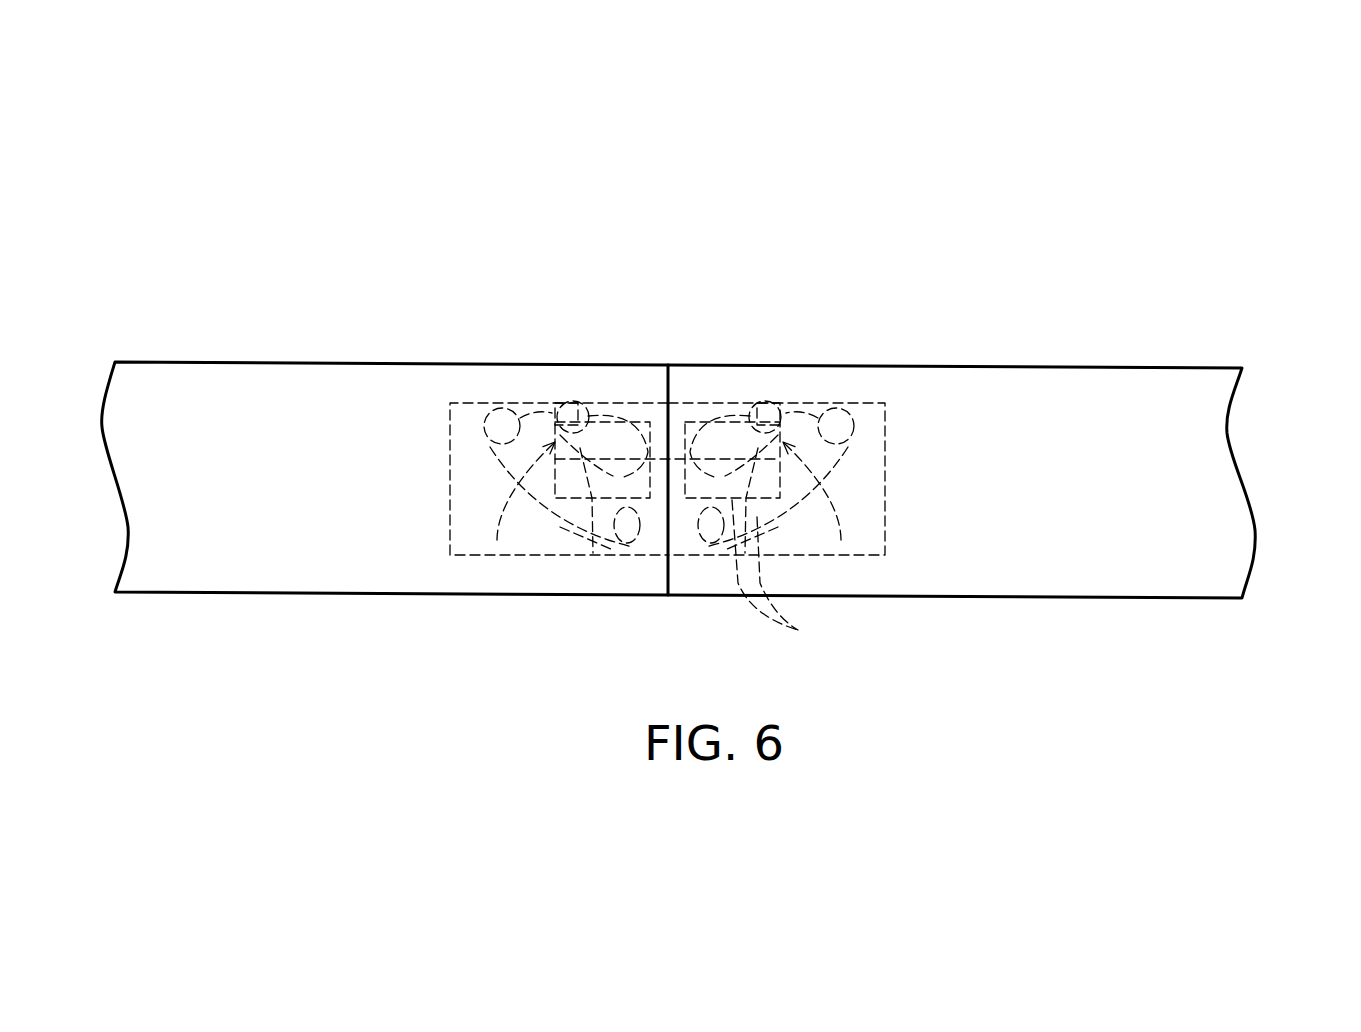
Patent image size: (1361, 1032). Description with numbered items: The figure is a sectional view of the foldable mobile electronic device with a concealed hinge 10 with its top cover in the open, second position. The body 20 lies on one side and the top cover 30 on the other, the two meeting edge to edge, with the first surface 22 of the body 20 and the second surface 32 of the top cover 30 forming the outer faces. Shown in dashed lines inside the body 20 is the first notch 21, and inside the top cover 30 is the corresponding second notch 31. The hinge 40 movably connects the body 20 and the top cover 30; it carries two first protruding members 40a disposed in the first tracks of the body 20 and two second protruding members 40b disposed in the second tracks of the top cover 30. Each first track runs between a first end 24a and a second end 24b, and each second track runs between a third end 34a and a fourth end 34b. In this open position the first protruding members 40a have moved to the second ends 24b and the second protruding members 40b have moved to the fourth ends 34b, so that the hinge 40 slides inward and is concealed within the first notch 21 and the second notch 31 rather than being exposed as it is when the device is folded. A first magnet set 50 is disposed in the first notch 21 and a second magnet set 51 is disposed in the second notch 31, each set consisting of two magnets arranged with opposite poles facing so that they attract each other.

The foldable mobile electronic device with a concealed hinge 10 is at (64, 173).
The body 20 is at (308, 598).
The first notch 21 is at (470, 547).
The first surface 22 is at (163, 358).
The first end 24a is at (606, 553).
The second end 24b is at (483, 405).
The top cover 30 is at (1280, 433).
The second notch 31 is at (862, 525).
The second surface 32 is at (1172, 367).
The third end 34a is at (788, 622).
The fourth end 34b is at (757, 403).
The hinge 40 is at (648, 525).
The first protruding members 40a is at (498, 407).
The second protruding members 40b is at (838, 403).
The first magnet set 50 is at (497, 540).
The second magnet set 51 is at (840, 540).